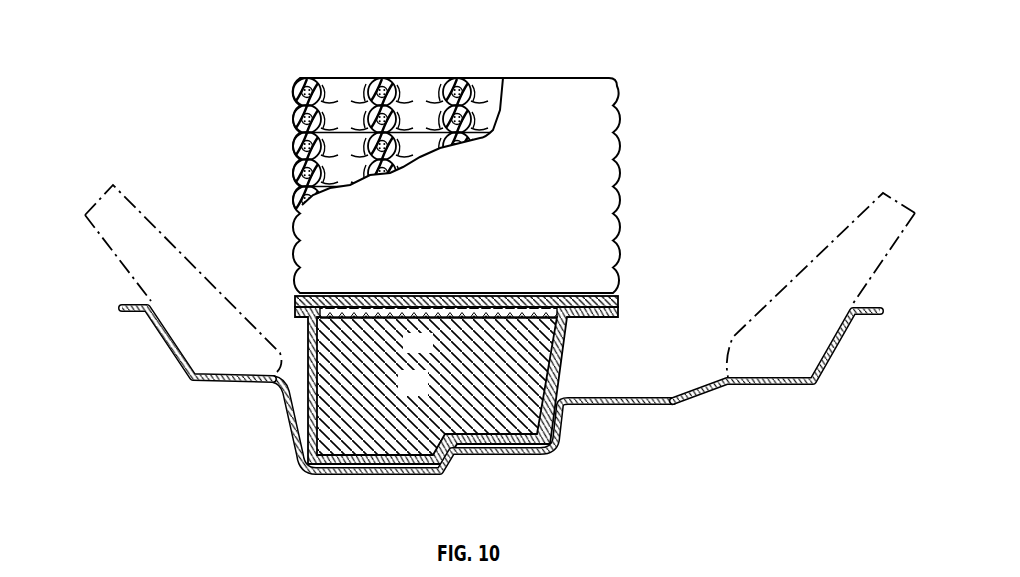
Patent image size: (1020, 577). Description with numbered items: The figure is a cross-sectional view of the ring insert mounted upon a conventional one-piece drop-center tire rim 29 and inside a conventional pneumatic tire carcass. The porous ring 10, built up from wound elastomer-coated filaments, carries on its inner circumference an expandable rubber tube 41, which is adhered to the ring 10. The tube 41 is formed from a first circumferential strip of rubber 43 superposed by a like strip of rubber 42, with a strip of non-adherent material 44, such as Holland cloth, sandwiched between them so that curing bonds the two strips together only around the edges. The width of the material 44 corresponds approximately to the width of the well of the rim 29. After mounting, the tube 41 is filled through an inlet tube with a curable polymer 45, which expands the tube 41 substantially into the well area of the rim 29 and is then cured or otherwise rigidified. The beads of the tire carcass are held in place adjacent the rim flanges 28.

The ring 10 is at (577, 66).
The flanges 28 is at (220, 330).
The one-piece tire rim 29 is at (612, 413).
The rubber tube 41 is at (566, 366).
The strip of uncured rubber 42 is at (165, 352).
The strip of uncured rubber 43 is at (620, 312).
The non-adherent material 44 is at (452, 318).
The curable polymer 45 is at (425, 393).